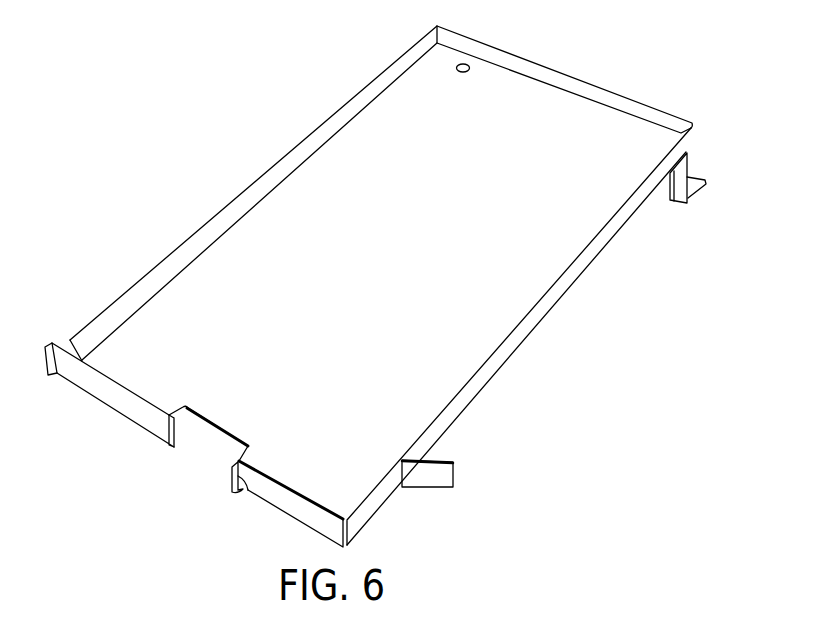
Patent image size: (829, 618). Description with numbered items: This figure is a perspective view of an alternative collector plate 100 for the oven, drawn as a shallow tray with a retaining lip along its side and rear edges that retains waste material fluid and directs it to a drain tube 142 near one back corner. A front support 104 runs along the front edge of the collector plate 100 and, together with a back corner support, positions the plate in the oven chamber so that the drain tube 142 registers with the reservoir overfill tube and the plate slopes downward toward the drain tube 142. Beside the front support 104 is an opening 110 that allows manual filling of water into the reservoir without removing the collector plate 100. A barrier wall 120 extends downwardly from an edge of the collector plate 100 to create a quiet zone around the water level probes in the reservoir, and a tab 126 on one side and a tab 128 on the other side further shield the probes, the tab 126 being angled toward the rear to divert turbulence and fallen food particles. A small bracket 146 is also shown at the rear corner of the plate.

The collector plate 100 is at (228, 177).
The front support 104 is at (113, 399).
The opening 110 is at (203, 448).
The barrier wall 120 is at (382, 497).
The tab 126 is at (443, 475).
The tab 128 is at (240, 490).
The drain tube 142 is at (463, 65).
The mounting bracket tab 146 is at (698, 188).